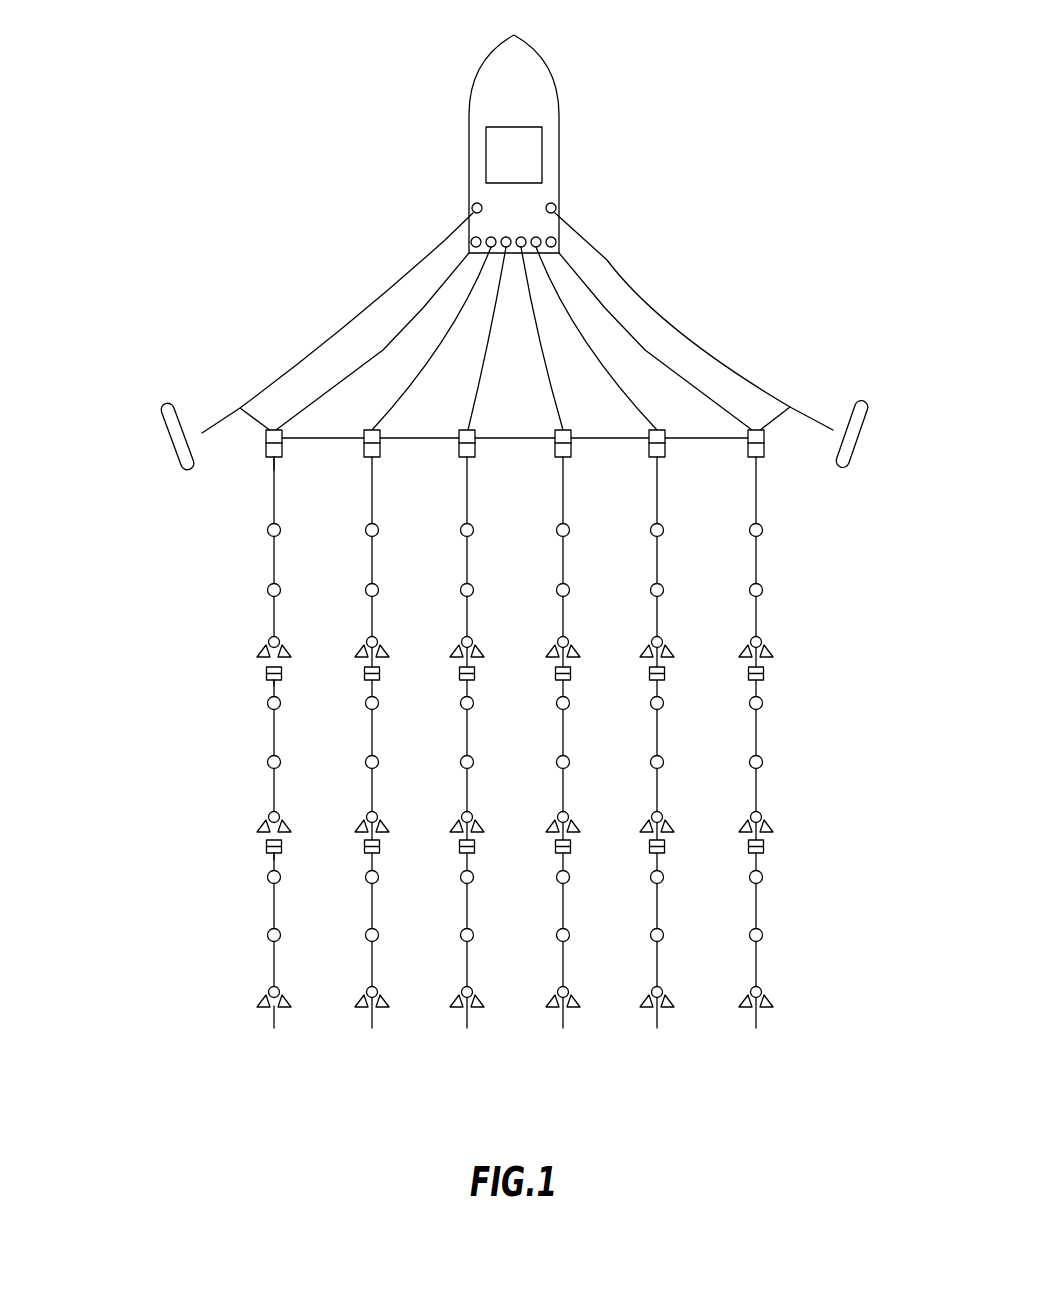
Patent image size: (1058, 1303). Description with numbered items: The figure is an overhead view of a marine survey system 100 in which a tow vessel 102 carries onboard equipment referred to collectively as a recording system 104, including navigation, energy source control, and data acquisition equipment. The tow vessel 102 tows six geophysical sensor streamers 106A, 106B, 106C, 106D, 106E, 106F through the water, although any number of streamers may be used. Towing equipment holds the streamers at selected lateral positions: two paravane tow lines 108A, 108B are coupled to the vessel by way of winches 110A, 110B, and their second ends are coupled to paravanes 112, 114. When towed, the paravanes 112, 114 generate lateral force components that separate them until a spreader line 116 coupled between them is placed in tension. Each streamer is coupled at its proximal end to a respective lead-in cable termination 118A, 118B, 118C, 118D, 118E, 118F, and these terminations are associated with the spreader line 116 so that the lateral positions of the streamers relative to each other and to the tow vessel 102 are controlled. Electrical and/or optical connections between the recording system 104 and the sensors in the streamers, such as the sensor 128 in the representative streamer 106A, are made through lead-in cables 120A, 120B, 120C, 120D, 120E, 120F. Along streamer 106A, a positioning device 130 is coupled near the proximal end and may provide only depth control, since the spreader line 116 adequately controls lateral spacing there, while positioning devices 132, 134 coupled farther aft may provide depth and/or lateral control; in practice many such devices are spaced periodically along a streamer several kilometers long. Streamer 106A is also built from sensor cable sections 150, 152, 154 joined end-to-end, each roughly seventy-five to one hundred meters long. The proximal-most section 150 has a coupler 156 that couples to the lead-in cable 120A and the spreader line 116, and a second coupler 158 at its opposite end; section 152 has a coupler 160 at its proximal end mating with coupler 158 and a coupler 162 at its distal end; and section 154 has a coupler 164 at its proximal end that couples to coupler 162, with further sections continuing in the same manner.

The marine survey system 100 is at (332, 70).
The tow vessel 102 is at (477, 87).
The recording system 104 is at (532, 127).
The geophysical sensor streamer 106A is at (223, 782).
The geophysical sensor streamer 106B is at (371, 1032).
The geophysical sensor streamer 106C is at (466, 1032).
The geophysical sensor streamer 106D is at (562, 1032).
The geophysical sensor streamer 106E is at (656, 1032).
The geophysical sensor streamer 106F is at (755, 1032).
The paravane tow line 108A is at (432, 250).
The paravane tow line 108B is at (607, 258).
The winch 110A is at (473, 205).
The winch 110B is at (556, 205).
The paravane 112 is at (165, 437).
The paravane 114 is at (874, 441).
The spreader line 116 is at (493, 442).
The lead-in cable termination 118A is at (266, 444).
The lead-in cable termination 118B is at (364, 447).
The lead-in cable termination 118C is at (459, 447).
The lead-in cable termination 118D is at (571, 447).
The lead-in cable termination 118E is at (665, 446).
The lead-in cable termination 118F is at (764, 447).
The lead-in cable 120A is at (433, 293).
The lead-in cable 120B is at (450, 330).
The lead-in cable 120C is at (475, 392).
The lead-in cable 120D is at (557, 403).
The lead-in cable 120E is at (590, 338).
The lead-in cable 120F is at (593, 288).
The sensor 128 is at (267, 532).
The positioning device 130 is at (258, 650).
The positioning device 132 is at (256, 830).
The positioning device 134 is at (252, 1000).
The sensor cable section 150 is at (208, 549).
The sensor cable section 152 is at (208, 745).
The sensor cable section 154 is at (210, 968).
The coupler 156 is at (271, 466).
The coupler 158 is at (282, 669).
The coupler 160 is at (282, 677).
The coupler 162 is at (282, 843).
The coupler 164 is at (282, 850).